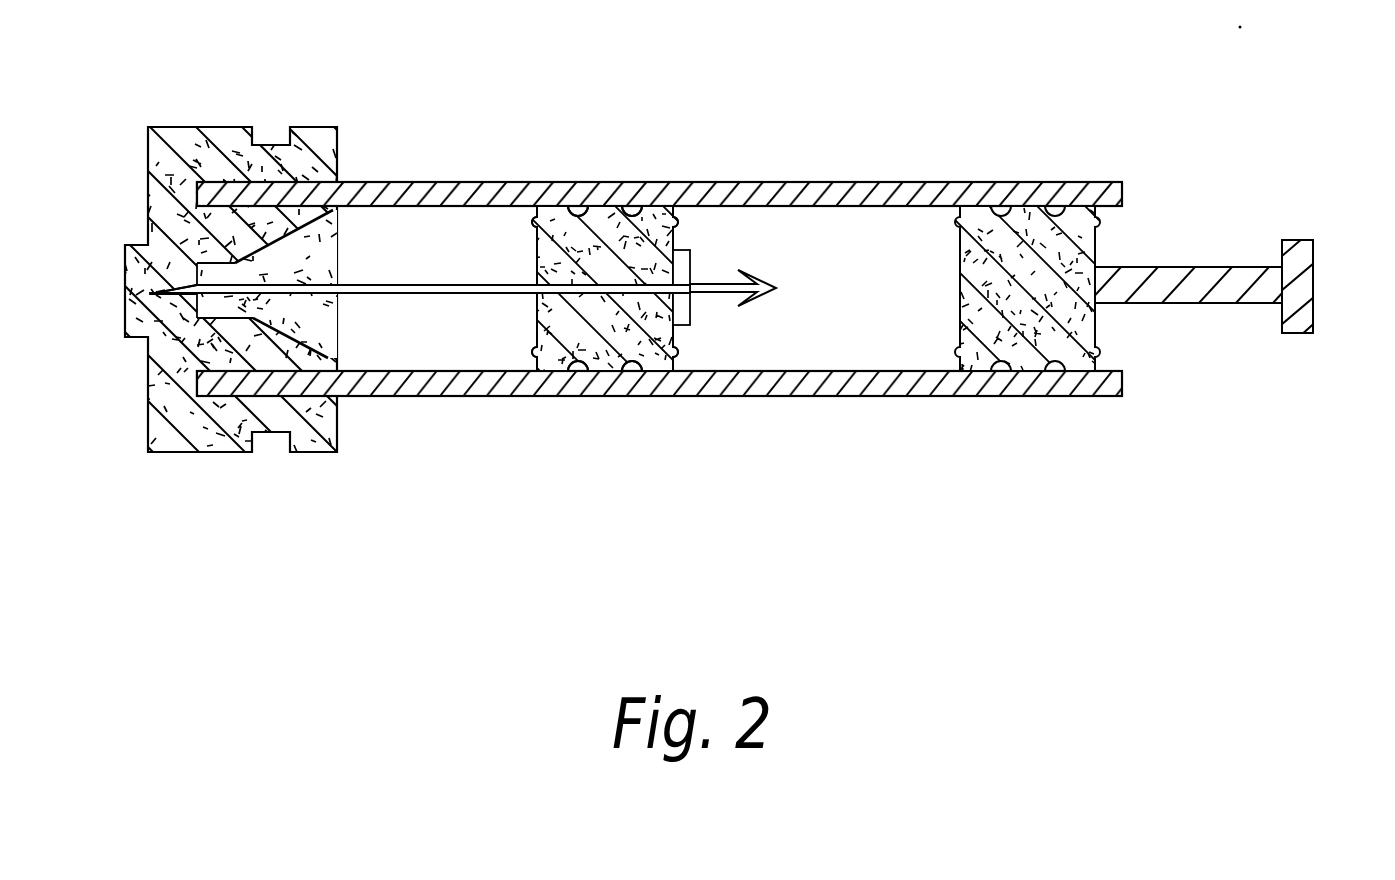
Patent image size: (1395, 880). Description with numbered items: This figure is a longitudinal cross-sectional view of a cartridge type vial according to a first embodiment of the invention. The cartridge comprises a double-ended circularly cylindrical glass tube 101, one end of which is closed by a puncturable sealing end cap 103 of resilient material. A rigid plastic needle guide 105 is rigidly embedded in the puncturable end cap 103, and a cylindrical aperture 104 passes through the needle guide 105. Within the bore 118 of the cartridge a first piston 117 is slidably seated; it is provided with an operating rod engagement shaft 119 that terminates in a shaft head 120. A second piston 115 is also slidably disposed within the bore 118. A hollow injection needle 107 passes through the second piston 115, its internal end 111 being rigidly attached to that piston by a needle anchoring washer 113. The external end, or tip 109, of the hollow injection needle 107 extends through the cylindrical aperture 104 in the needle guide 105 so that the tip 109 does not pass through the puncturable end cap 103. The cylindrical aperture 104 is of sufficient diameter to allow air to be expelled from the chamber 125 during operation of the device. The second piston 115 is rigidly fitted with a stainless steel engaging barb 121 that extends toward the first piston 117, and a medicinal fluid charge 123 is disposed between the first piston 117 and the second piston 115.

The glass tube 101 is at (488, 182).
The puncturable sealing end cap 103 is at (313, 127).
The cylindrical aperture 104 is at (363, 282).
The needle guide 105 is at (268, 373).
The hollow injection needle 107 is at (502, 350).
The external end (tip) 109 is at (157, 300).
The internal end 111 is at (672, 287).
The needle anchoring washer 113 is at (697, 262).
The second piston 115 is at (628, 182).
The first piston 117 is at (1030, 222).
The bore 118 is at (692, 353).
The operating rod engagement shaft 119 is at (1200, 280).
The shaft head 120 is at (1312, 240).
The engaging barb 121 is at (760, 273).
The medicinal fluid charge 123 is at (890, 338).
The chamber 125 is at (380, 340).